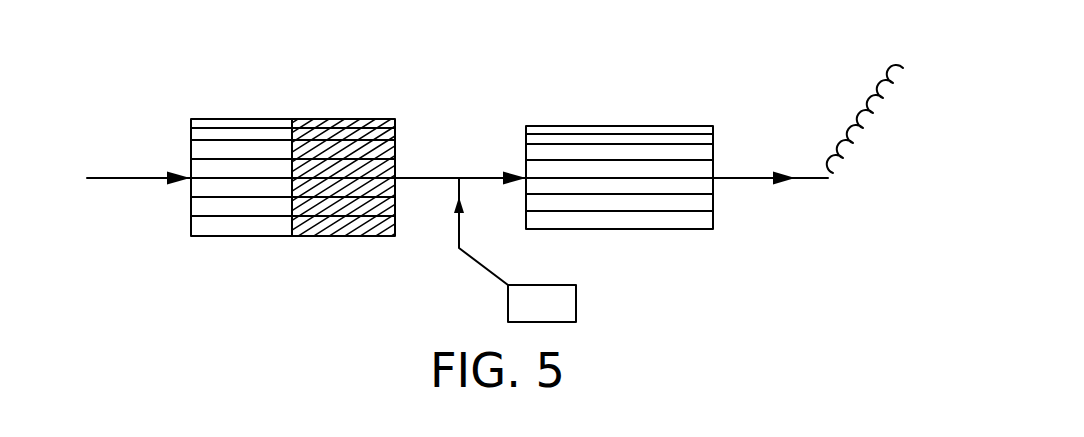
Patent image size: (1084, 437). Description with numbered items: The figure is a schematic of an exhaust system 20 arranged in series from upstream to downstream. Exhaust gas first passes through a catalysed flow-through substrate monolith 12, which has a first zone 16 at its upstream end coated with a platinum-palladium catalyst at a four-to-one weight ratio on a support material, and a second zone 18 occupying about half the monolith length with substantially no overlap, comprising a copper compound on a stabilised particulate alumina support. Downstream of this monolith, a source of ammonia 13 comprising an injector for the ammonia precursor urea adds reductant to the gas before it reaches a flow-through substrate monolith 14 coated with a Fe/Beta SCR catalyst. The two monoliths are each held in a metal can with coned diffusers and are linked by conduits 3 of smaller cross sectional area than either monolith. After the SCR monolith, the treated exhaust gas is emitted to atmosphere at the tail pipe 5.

The conduits 3 is at (143, 181).
The tail pipe 5 is at (832, 192).
The catalysed flow-through substrate monolith 12 is at (342, 188).
The source of ammonia 13 is at (487, 272).
The flow-through substrate monolith 14 is at (622, 233).
The first zone 16 is at (232, 118).
The second zone 18 is at (344, 118).
The exhaust system 20 is at (488, 147).